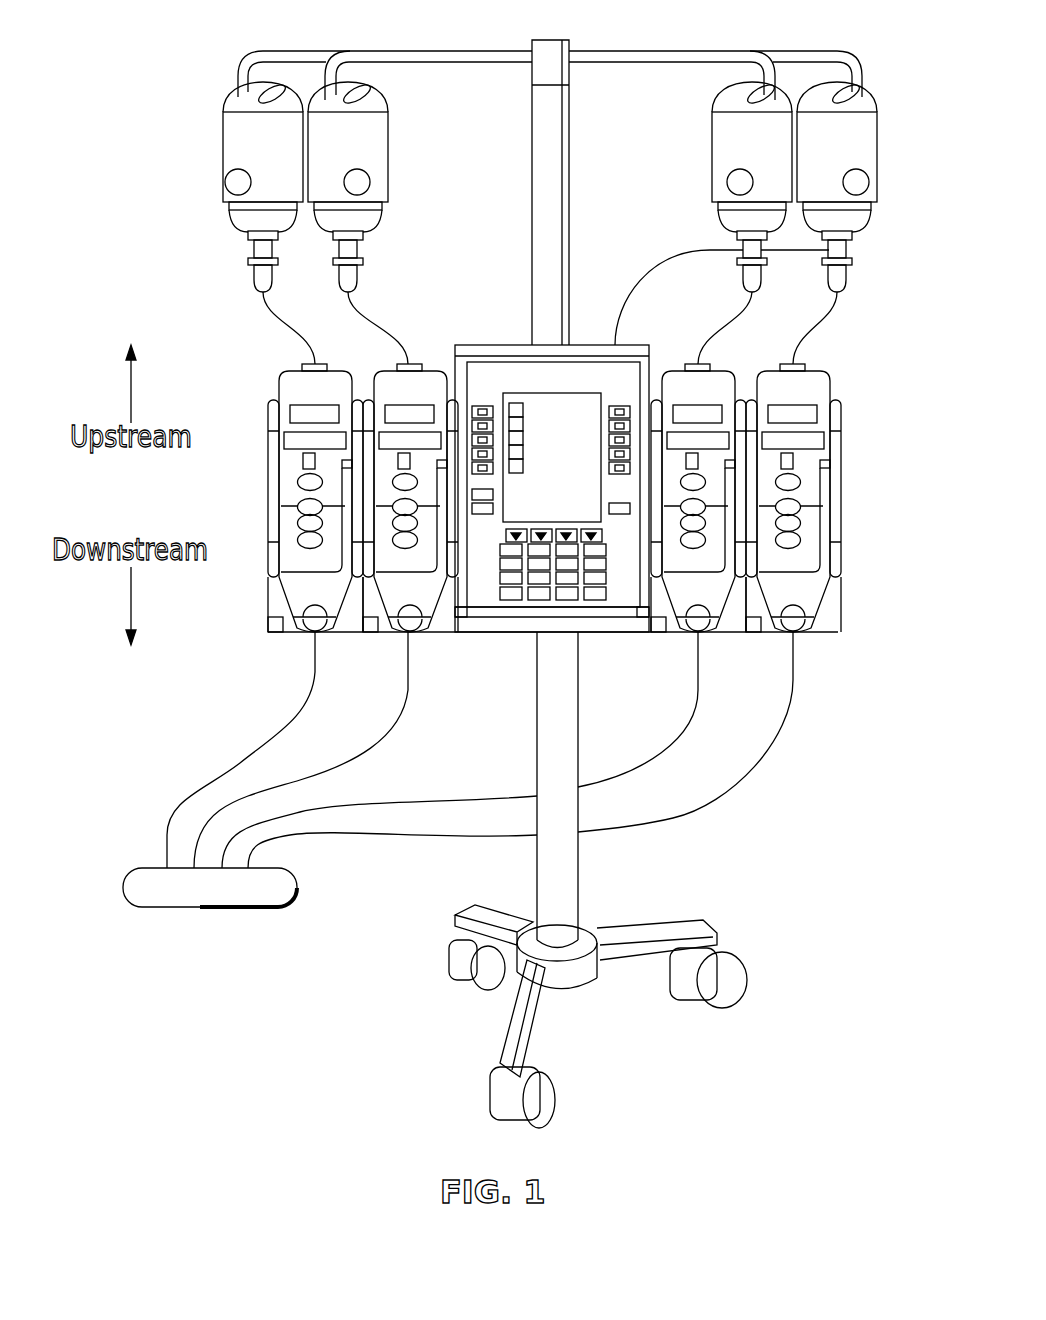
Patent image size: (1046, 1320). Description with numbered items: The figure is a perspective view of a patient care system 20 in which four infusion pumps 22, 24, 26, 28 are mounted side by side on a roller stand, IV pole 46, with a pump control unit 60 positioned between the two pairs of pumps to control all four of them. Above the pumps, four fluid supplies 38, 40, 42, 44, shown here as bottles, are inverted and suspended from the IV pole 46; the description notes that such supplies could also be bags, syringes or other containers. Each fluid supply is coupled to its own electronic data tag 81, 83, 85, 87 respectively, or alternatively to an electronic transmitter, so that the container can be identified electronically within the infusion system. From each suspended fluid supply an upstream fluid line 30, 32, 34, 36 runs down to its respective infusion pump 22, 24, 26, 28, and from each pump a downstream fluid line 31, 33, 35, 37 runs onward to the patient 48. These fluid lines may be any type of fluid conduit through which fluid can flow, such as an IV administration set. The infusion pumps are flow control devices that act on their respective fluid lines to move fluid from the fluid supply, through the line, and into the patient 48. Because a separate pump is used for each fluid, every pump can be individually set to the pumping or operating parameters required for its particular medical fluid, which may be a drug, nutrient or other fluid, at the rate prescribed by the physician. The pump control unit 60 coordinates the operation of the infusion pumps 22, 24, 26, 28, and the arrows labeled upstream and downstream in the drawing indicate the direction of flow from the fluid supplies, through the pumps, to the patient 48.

The patient care system 20 is at (215, 33).
The infusion pump 22 is at (828, 368).
The infusion pump 24 is at (672, 366).
The infusion pump 26 is at (388, 368).
The infusion pump 28 is at (290, 368).
The upstream fluid line 30 is at (841, 297).
The downstream fluid line 31 is at (793, 672).
The upstream fluid line 32 is at (744, 311).
The downstream fluid line 33 is at (696, 686).
The upstream fluid line 34 is at (368, 318).
The downstream fluid line 35 is at (392, 722).
The upstream fluid line 36 is at (267, 312).
The downstream fluid line 37 is at (308, 702).
The fluid supply 38 is at (879, 137).
The fluid supply 40 is at (711, 137).
The fluid supply 42 is at (389, 137).
The fluid supply 44 is at (224, 136).
The IV pole 46 is at (580, 873).
The patient 48 is at (124, 888).
The pump control unit 60 is at (524, 345).
The electronic data tag 81 is at (869, 185).
The electronic data tag 83 is at (727, 186).
The electronic data tag 85 is at (370, 185).
The electronic data tag 87 is at (225, 184).